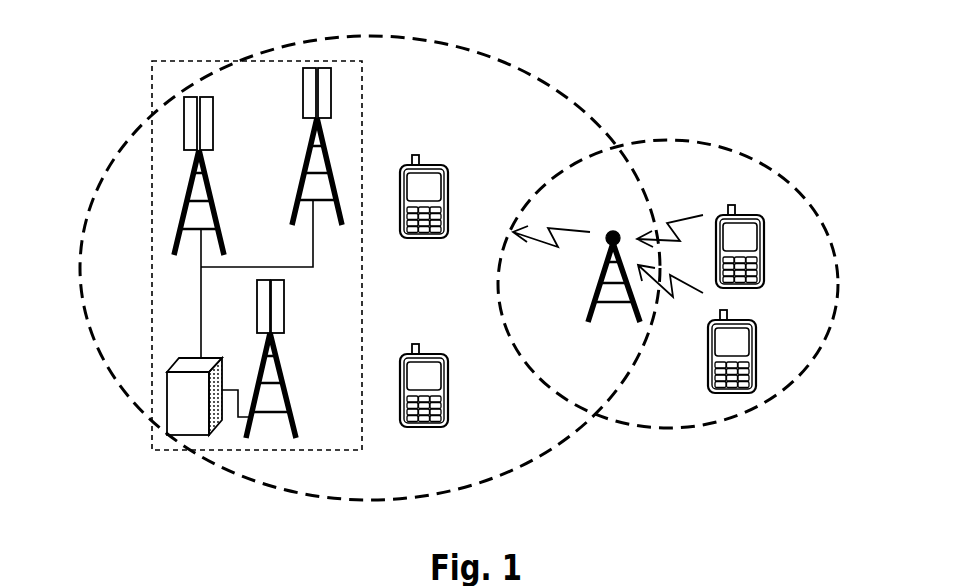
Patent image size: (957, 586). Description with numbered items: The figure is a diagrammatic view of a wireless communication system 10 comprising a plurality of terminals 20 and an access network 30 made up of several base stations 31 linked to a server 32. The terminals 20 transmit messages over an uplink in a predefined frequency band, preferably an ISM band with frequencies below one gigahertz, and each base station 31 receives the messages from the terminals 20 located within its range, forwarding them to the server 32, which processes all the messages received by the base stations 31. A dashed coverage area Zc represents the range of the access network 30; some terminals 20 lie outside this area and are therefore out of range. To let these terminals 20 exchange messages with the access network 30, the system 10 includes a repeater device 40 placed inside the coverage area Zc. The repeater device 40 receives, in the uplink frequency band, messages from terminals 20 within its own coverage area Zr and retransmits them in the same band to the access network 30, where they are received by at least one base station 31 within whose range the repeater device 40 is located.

The wireless communication system 10 is at (125, 90).
The terminal 20 is at (448, 200).
The access network 30 is at (258, 450).
The base station 31 is at (213, 118).
The server 32 is at (167, 403).
The repeater device 40 is at (610, 244).
The coverage area of the access network Zc is at (565, 443).
The coverage area of the repeater device Zr is at (773, 170).